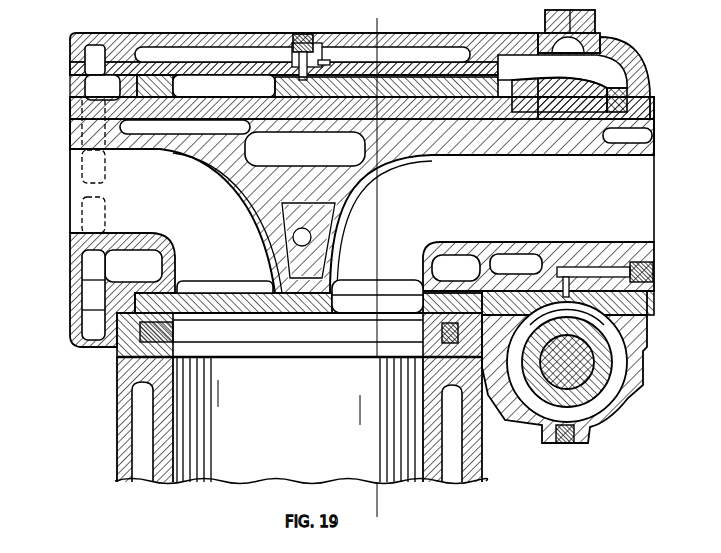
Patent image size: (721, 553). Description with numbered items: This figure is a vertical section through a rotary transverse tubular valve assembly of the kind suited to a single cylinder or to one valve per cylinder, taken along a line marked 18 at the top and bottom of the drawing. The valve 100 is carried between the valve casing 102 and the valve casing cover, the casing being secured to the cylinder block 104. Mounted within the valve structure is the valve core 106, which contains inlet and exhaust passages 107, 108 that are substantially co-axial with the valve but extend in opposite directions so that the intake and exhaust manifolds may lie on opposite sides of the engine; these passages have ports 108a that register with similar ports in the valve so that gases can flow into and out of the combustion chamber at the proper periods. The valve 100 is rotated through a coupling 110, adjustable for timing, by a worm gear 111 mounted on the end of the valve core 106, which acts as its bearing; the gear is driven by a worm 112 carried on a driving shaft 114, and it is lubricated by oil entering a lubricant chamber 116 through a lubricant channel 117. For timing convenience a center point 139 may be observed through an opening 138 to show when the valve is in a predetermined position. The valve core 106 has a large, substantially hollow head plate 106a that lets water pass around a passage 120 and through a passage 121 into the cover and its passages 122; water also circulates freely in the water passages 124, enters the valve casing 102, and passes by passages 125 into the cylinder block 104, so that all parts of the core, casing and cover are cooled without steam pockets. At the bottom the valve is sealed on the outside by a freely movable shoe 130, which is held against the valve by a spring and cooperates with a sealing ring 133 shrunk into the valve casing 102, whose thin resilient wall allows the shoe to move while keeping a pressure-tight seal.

The valve 100 is at (425, 38).
The passage 121 is at (130, 57).
The passages 122 is at (258, 52).
The opening 138 is at (300, 36).
The center point 139 is at (328, 70).
The passage 120 is at (95, 50).
The coupling 110 is at (503, 95).
The worm gear 111 is at (635, 70).
The valve core 106 is at (355, 188).
The inlet and exhaust passages 107 is at (650, 193).
The inlet and exhaust passages 108 is at (110, 184).
The water passages 124 is at (233, 174).
The ports 108a is at (204, 283).
The head plate 106a is at (70, 330).
The valve casing 102 is at (118, 347).
The passages 125 is at (122, 380).
The sealing ring 133 is at (412, 338).
The valve shoe 130 is at (178, 313).
The cylinder block 104 is at (120, 436).
The section line 18- 18 is at (360, 20).
The lubricant chamber 116 is at (620, 322).
The worm 112 is at (617, 381).
The driving shaft 114 is at (580, 356).
The lubricant channel 117 is at (655, 270).